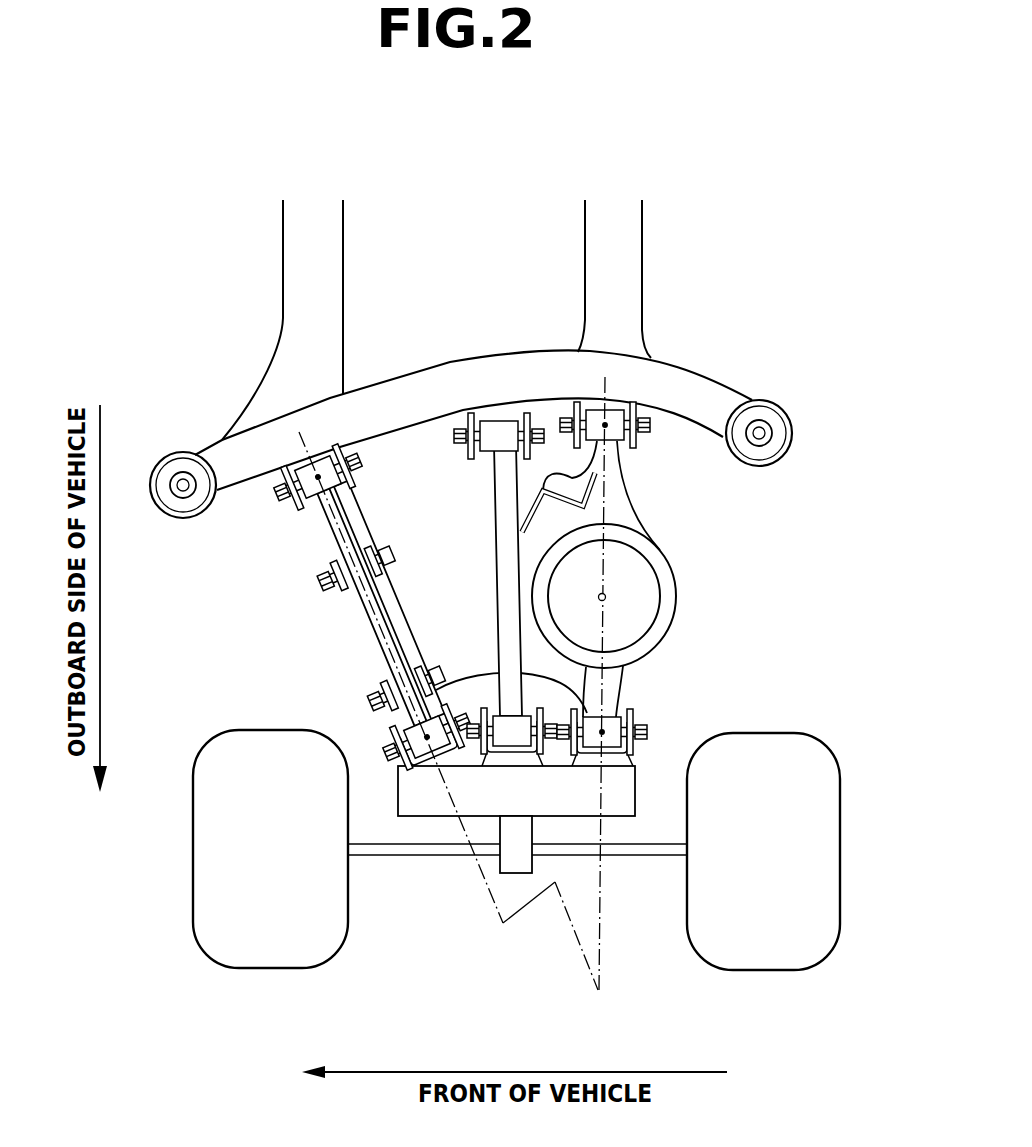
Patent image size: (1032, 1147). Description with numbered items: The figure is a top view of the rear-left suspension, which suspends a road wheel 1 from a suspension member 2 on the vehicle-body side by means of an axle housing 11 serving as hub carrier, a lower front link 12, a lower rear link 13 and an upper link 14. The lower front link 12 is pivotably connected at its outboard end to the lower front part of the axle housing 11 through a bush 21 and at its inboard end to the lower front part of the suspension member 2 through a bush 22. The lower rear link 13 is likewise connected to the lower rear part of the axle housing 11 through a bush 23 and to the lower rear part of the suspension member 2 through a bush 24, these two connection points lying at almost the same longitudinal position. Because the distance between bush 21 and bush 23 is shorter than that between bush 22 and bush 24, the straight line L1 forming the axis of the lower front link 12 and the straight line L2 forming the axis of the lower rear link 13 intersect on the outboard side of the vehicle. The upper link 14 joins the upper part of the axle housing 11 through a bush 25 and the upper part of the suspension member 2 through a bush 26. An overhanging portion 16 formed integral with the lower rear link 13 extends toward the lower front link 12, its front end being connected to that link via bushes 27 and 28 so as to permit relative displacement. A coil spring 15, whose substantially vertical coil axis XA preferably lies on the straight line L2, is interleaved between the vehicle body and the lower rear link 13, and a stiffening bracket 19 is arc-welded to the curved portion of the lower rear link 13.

The road wheel 1 is at (810, 868).
The suspension member 2 is at (503, 375).
The axle housing 11 is at (625, 795).
The lower front link 12 is at (380, 638).
The lower rear link 13 is at (623, 526).
The upper link 14 is at (503, 566).
The coil spring 15 is at (663, 603).
The overhanging portion 16 is at (567, 526).
The stiffening bracket 19 is at (600, 463).
The bush 21 is at (417, 767).
The bush 22 is at (293, 497).
The bush 23 is at (615, 722).
The bush 24 is at (597, 418).
The bush 25 is at (513, 736).
The bush 26 is at (494, 428).
The bush 27 is at (380, 674).
The bush 28 is at (337, 558).
The straight line L1 is at (363, 602).
The straight line L2 is at (608, 686).
The coil axis XA is at (625, 598).